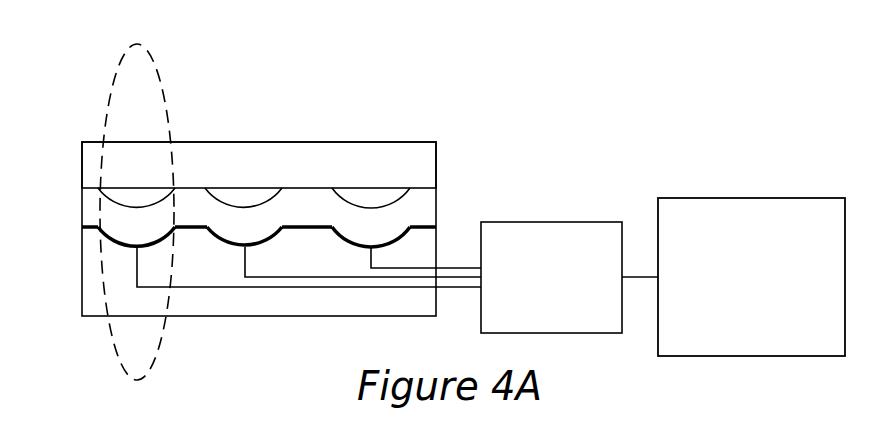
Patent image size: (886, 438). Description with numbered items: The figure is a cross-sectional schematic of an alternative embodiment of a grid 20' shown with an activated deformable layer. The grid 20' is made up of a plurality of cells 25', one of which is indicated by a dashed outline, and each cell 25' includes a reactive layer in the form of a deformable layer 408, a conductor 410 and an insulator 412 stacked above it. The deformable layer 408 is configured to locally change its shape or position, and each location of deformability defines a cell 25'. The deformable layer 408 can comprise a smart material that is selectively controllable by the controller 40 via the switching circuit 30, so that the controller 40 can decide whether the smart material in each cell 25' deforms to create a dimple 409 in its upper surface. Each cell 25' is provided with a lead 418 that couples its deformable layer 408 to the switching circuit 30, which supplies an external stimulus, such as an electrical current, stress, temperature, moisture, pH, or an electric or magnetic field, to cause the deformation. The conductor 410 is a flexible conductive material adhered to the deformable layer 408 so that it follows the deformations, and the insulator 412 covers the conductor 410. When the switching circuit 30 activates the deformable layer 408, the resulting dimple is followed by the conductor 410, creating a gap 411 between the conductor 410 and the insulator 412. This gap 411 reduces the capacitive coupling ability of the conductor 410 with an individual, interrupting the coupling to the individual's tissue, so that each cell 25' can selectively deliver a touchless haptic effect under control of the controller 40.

The grid 20' is at (285, 196).
The cell 25' is at (102, 205).
The switching circuit 30 is at (569, 277).
The controller 40 is at (751, 277).
The deformable layer 408 is at (84, 242).
The dimple 409 is at (125, 248).
The conductor 410 is at (259, 207).
The gap 411 is at (140, 199).
The insulator 412 is at (259, 165).
The lead 418 is at (210, 288).